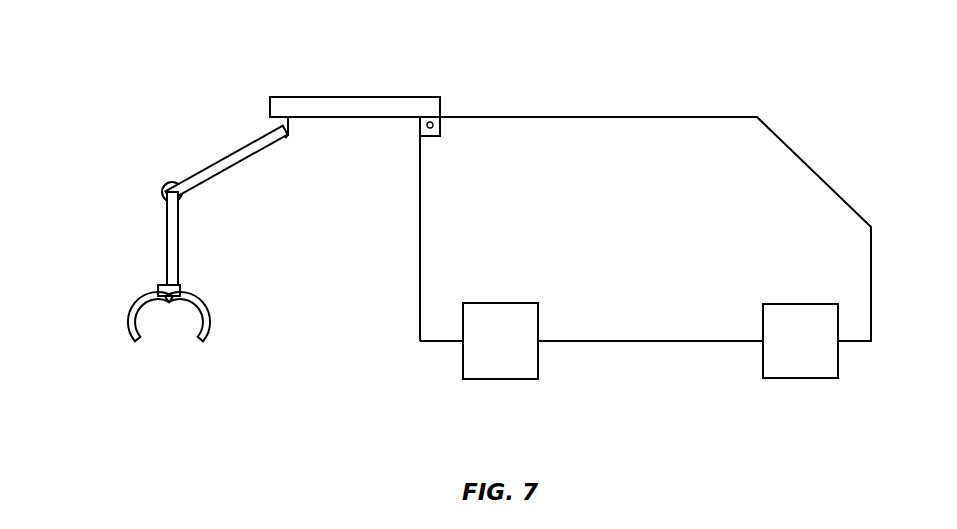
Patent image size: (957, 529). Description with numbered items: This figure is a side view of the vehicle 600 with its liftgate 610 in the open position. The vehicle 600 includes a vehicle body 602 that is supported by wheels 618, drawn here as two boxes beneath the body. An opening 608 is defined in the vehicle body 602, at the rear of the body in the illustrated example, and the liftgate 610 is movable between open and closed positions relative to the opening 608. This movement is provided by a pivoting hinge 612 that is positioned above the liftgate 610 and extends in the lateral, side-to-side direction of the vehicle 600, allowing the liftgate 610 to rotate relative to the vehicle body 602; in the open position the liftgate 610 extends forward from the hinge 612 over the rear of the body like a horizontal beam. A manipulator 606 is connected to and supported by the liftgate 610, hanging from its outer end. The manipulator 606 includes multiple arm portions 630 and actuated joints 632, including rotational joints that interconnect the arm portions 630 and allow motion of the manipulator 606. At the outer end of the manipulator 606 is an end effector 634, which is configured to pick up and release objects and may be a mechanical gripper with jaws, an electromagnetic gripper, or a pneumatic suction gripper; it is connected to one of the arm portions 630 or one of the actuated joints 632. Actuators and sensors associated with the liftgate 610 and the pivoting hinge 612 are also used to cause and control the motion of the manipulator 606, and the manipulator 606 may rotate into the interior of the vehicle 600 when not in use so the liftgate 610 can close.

The vehicle 600 is at (235, 96).
The vehicle body 602 is at (805, 160).
The manipulator 606 is at (122, 285).
The opening 608 is at (421, 215).
The liftgate 610 is at (352, 97).
The pivoting hinge 612 is at (437, 125).
The wheels 618 is at (763, 368).
The arm portions 630 is at (218, 173).
The actuated joints 632 is at (167, 183).
The end effector 634 is at (205, 338).